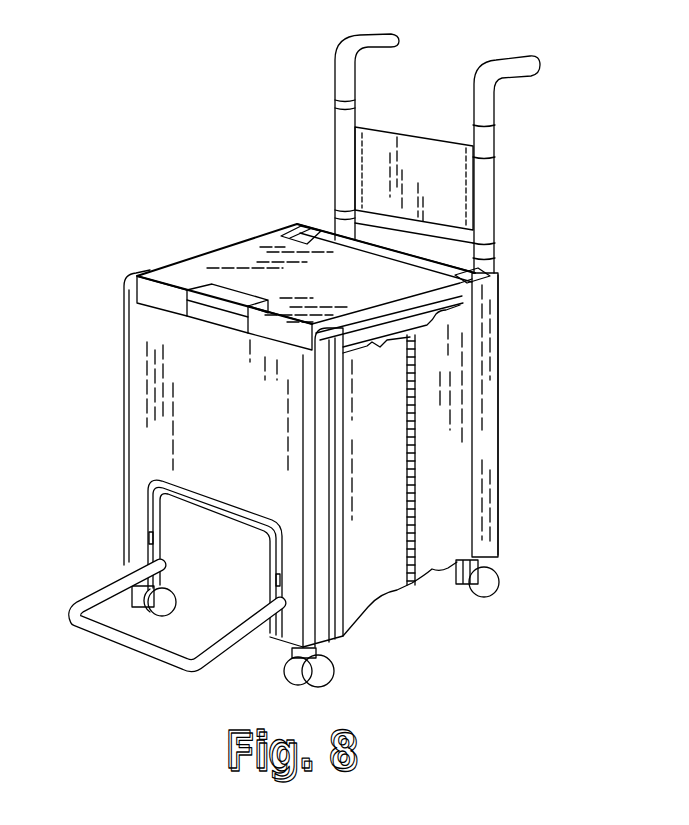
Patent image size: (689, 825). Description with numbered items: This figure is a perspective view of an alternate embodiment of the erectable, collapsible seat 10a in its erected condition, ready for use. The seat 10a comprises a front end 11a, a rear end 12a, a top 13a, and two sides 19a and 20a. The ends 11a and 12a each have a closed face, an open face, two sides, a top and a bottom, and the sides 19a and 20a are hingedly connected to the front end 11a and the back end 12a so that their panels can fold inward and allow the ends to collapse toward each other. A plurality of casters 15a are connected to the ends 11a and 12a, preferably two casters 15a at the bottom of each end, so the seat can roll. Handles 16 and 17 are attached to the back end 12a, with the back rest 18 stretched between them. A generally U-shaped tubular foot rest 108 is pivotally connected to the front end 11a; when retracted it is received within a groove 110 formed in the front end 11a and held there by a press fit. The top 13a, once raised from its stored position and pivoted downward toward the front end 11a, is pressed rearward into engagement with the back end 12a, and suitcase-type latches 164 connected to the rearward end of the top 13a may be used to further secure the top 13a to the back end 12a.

The side 20a is at (303, 351).
The erectable, collapsible seat 10a is at (502, 432).
The front end 11a is at (122, 407).
The rear end 12a is at (490, 398).
The top 13a is at (247, 262).
The casters 15a is at (500, 578).
The handle 16 is at (518, 80).
The handle 17 is at (370, 42).
The back rest 18 is at (418, 148).
The side 19a is at (452, 487).
The tubular foot rest 108 is at (115, 633).
The groove 110 is at (193, 488).
The latches 164 is at (306, 228).